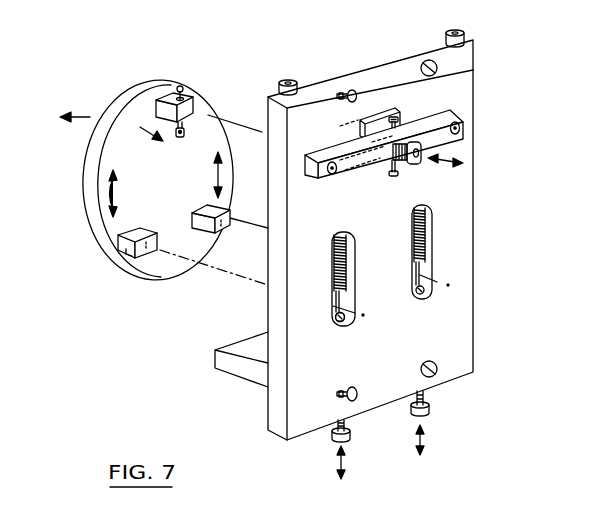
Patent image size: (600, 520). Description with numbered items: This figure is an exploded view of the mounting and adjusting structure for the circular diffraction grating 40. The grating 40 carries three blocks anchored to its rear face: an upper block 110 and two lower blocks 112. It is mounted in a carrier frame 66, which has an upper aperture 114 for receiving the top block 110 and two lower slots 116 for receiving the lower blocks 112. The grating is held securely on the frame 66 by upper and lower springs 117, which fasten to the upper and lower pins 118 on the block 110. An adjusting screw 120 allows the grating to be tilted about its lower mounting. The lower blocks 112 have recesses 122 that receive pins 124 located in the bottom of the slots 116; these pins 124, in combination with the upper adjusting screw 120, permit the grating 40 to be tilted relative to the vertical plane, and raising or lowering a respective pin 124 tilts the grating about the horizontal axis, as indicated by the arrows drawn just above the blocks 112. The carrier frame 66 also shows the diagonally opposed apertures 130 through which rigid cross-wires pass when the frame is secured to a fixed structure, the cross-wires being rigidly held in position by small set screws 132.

The circular diffraction grating 40 is at (87, 172).
The carrier frame 66 is at (467, 92).
The upper block 110 is at (190, 108).
The lower blocks 112 is at (193, 215).
The upper aperture 114 is at (400, 116).
The lower slots 116 is at (417, 292).
The upper and lower springs 117 is at (360, 121).
The upper and lower pins 118 is at (183, 88).
The adjusting screw 120 is at (416, 163).
The recesses 122 is at (217, 237).
The pins 124 is at (347, 322).
The diagonally opposed apertures 130 is at (448, 62).
The set screws 132 is at (421, 368).